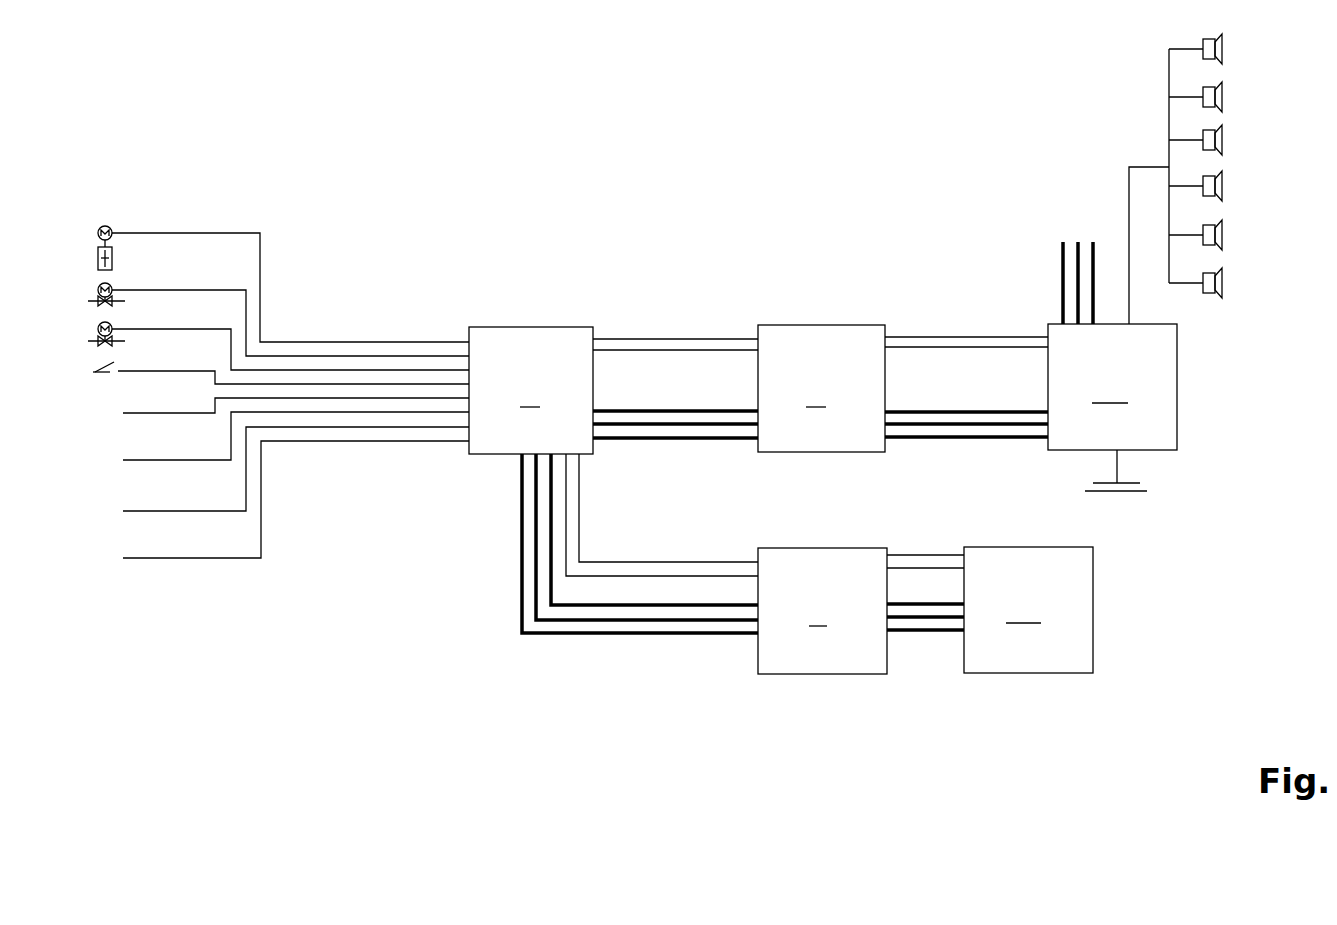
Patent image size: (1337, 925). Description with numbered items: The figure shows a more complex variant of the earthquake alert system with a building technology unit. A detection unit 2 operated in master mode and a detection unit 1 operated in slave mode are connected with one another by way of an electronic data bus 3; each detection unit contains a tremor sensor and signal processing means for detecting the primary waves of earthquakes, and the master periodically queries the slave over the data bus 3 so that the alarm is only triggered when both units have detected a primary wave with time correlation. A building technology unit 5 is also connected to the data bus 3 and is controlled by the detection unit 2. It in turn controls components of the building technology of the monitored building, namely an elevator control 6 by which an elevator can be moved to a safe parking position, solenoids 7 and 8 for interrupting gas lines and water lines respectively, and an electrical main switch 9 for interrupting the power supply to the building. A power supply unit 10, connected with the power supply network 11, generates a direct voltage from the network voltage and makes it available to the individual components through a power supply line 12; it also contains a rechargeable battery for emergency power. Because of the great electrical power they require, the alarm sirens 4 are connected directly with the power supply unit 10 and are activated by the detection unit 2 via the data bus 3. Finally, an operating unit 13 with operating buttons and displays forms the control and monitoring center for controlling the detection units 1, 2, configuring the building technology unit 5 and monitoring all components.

The detection unit 1 is at (822, 611).
The detection unit 2 is at (821, 388).
The data bus 3 is at (1063, 280).
The sirens 4 is at (1213, 55).
The building technology unit 5 is at (352, 395).
The elevator control 6 is at (97, 258).
The solenoid 7 is at (98, 288).
The solenoid 8 is at (98, 328).
The electrical main switch 9 is at (100, 367).
The power supply unit 10 is at (1112, 387).
The power supply network 11 is at (1117, 492).
The power supply line 12 is at (677, 335).
The operating unit 13 is at (1028, 610).